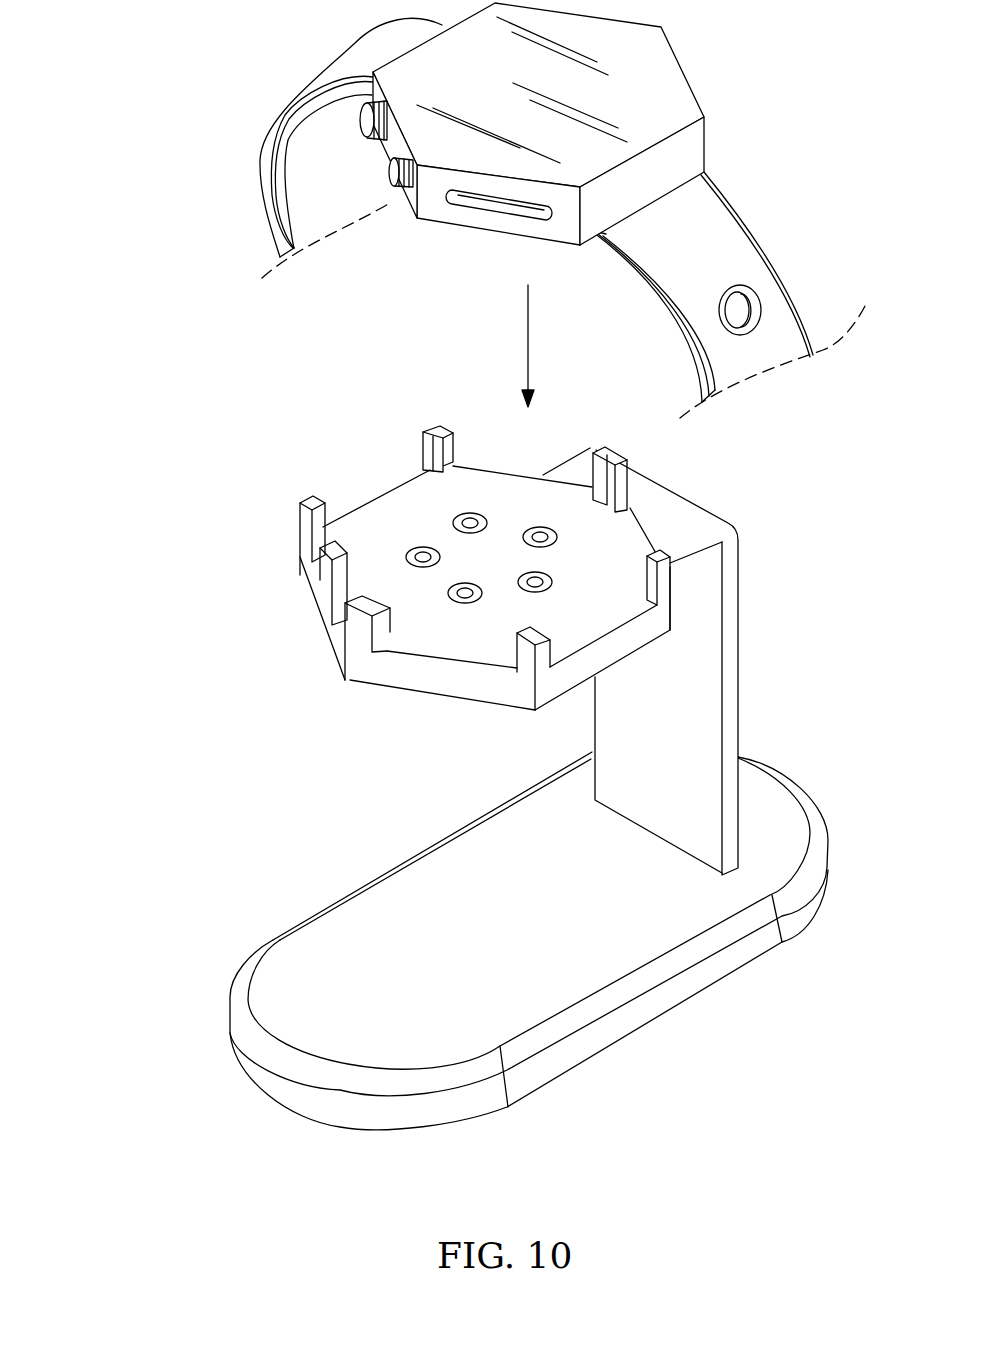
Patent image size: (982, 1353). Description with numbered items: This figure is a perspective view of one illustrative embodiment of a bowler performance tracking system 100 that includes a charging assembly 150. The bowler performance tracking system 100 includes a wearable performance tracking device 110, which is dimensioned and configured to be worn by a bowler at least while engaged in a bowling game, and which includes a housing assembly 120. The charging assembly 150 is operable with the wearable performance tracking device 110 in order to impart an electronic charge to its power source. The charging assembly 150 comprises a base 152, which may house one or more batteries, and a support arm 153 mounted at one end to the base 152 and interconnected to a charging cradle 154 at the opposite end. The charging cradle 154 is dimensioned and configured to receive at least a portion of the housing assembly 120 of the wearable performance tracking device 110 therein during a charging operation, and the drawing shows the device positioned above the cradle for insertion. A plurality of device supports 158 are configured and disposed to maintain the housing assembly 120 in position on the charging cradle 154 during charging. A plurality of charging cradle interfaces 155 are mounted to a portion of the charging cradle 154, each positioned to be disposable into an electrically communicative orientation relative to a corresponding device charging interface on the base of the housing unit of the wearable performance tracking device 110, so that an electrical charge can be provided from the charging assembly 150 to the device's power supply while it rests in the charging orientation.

The bowler performance tracking system 100 is at (146, 498).
The wearable performance tracking device 110 is at (780, 92).
The housing assembly 120 is at (431, 259).
The charging assembly 150 is at (735, 1052).
The base 152 is at (230, 1033).
The support arm 153 is at (738, 718).
The charging cradle 154 is at (455, 700).
The charging cradle interface 155 is at (447, 596).
The device support 158 is at (428, 428).